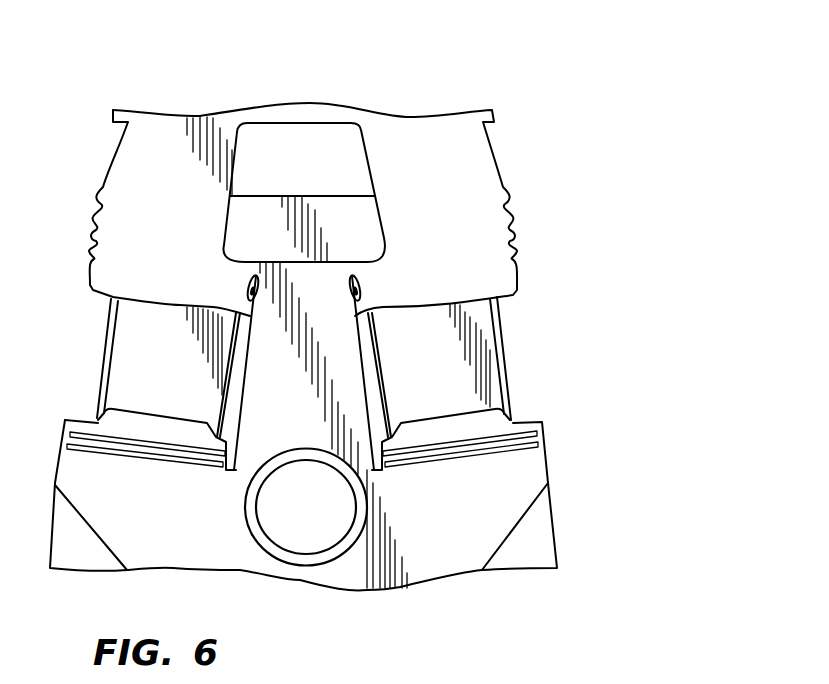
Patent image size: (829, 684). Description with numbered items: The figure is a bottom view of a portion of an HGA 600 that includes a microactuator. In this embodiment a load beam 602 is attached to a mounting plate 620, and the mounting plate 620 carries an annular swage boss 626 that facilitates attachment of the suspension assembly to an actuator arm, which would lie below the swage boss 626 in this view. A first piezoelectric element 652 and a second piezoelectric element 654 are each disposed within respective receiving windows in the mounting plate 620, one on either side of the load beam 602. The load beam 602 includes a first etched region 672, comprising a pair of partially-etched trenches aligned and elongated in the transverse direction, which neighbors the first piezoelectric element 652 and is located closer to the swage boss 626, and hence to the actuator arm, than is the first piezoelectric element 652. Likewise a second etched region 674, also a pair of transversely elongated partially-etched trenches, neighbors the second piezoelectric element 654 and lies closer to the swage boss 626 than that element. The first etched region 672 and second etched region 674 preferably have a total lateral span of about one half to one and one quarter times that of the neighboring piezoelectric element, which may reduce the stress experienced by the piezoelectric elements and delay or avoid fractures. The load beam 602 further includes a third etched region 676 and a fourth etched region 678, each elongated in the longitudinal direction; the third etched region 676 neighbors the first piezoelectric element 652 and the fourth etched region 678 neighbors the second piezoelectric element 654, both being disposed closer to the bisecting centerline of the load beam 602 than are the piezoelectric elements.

The HGA 600 is at (588, 93).
The load beam 602 is at (158, 143).
The mounting plate 620 is at (255, 220).
The annular swage boss 626 is at (319, 566).
The first piezoelectric element 652 is at (187, 370).
The second piezoelectric element 654 is at (452, 370).
The first etched region 672 is at (117, 438).
The second etched region 674 is at (412, 452).
The third etched region 676 is at (249, 280).
The fourth etched region 678 is at (358, 281).